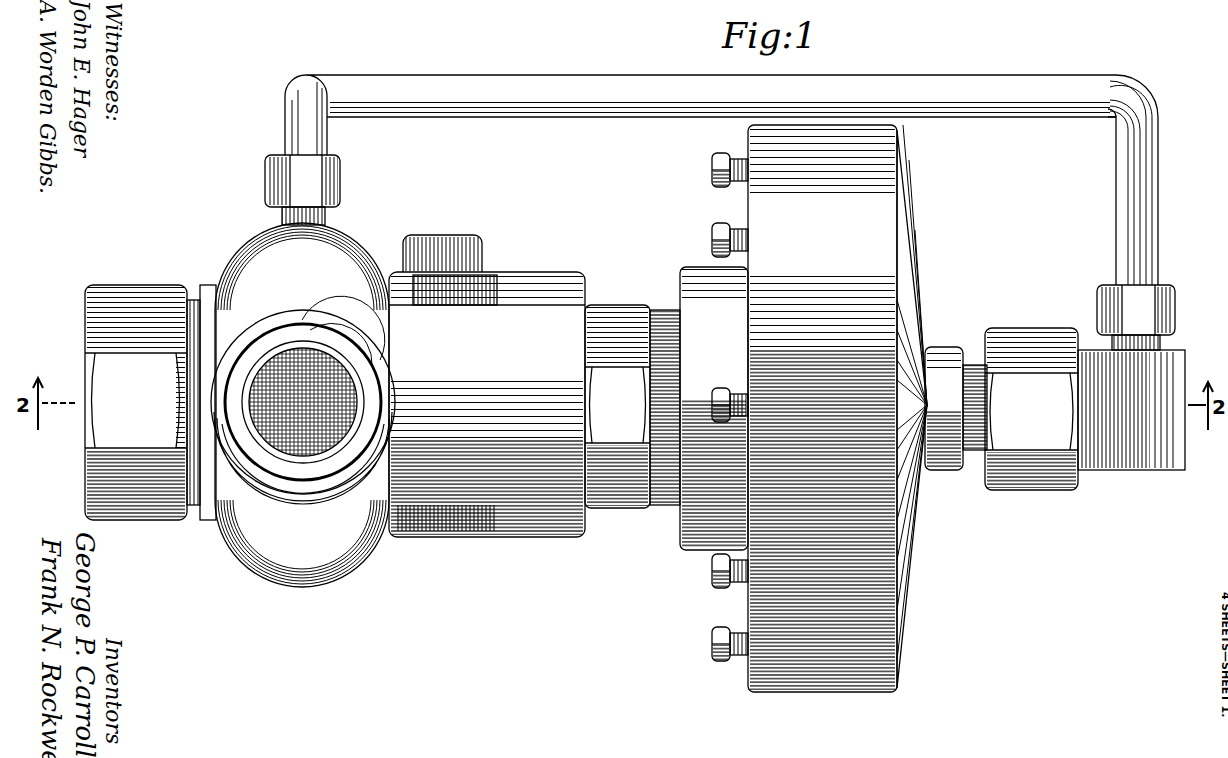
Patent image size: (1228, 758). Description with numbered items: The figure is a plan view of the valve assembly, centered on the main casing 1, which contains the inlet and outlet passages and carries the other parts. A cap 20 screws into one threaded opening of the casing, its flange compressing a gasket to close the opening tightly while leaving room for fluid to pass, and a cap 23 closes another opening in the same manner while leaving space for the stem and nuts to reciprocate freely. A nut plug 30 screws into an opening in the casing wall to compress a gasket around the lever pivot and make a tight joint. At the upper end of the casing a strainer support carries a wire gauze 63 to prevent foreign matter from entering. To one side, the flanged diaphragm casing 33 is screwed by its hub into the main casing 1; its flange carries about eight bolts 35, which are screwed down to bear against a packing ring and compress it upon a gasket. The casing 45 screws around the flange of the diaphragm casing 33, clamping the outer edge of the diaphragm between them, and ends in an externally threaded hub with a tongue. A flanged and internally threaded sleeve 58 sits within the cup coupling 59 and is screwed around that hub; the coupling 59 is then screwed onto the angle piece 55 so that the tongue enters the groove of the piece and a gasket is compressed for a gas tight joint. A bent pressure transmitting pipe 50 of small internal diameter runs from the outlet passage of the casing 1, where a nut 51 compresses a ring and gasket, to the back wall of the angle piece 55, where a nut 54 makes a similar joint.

The main casing 1 is at (287, 405).
The cap 20 is at (126, 297).
The cap 23 is at (614, 318).
The nut plug 30 is at (452, 246).
The flanged diaphragm casing 33 is at (681, 540).
The bolts 35 is at (714, 165).
The casing 45 is at (837, 408).
The pressure transmitting pipe 50 is at (930, 90).
The nut 51 is at (333, 181).
The nut 54 is at (1168, 318).
The angle piece 55 is at (1140, 455).
The flanged and internally threaded sleeve 58 is at (975, 460).
The cup coupling 59 is at (1040, 487).
The wire gauze 63 is at (298, 422).